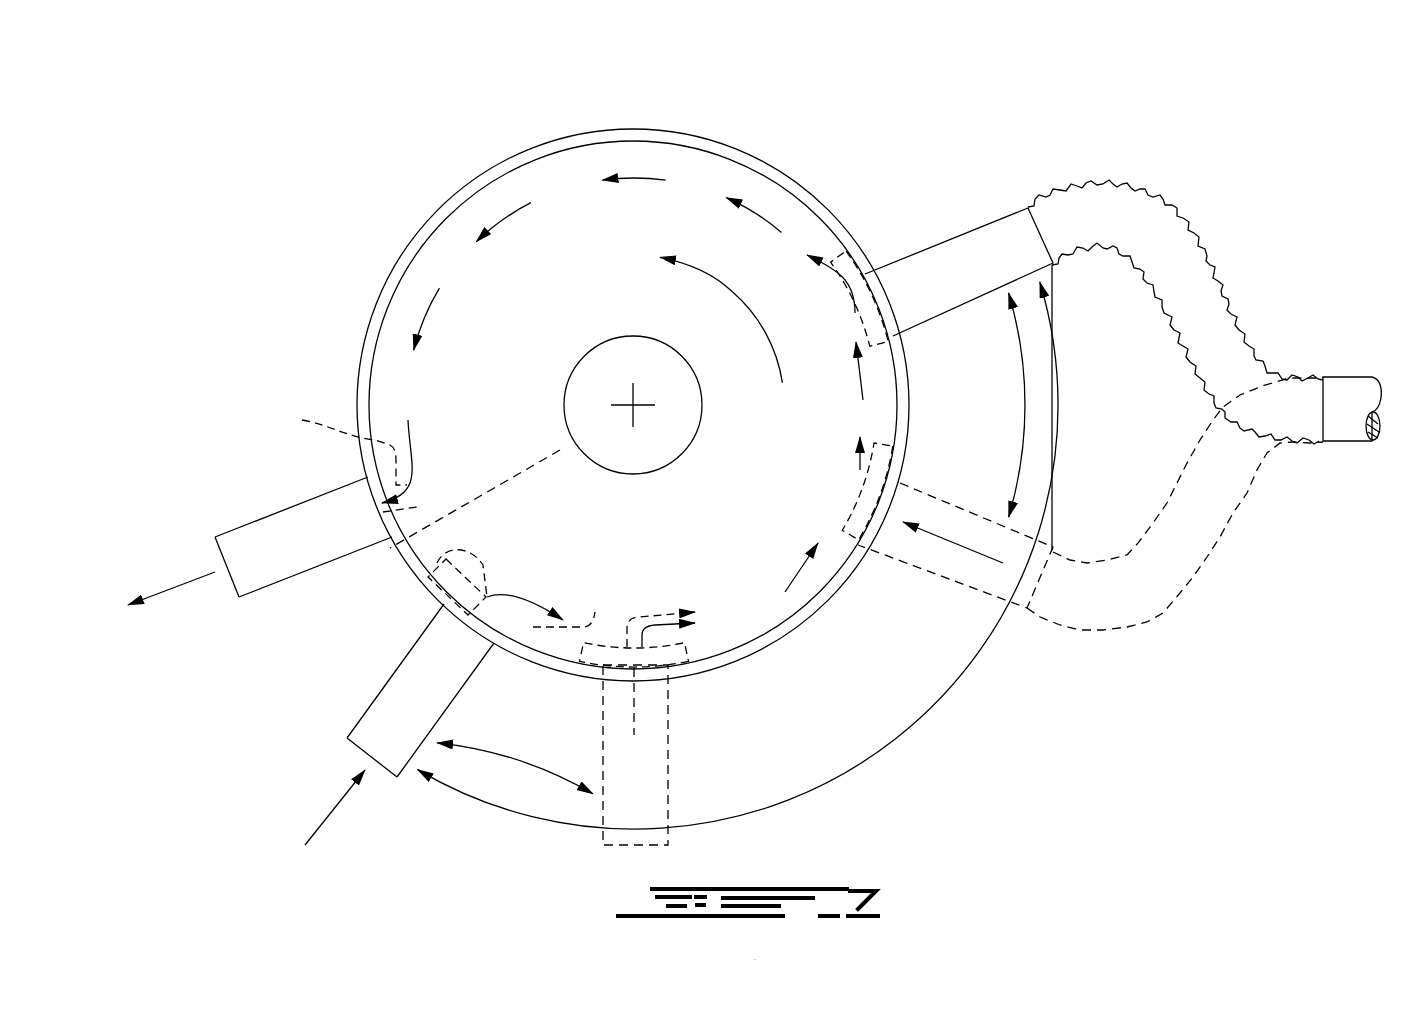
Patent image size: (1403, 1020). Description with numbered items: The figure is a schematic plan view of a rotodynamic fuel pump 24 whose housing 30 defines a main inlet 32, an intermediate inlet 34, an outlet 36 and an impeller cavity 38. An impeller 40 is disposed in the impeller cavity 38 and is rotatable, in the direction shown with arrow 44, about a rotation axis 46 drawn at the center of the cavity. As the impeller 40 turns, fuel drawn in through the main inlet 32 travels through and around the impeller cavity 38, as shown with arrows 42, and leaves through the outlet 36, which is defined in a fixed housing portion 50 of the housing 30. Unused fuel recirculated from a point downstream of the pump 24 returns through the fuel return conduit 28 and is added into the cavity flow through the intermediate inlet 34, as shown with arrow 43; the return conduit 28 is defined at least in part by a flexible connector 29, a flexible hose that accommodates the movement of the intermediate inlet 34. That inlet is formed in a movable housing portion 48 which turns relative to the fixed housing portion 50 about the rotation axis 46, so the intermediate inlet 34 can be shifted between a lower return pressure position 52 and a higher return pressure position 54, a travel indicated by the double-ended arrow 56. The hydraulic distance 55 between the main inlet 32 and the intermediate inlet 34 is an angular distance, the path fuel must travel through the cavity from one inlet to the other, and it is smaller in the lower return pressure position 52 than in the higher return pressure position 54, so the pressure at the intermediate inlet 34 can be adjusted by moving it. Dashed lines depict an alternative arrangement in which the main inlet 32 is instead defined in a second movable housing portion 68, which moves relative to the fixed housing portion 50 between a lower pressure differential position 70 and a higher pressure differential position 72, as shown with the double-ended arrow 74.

The pump 24 is at (250, 170).
The fuel return conduit 28 is at (1217, 316).
The flexible connector 29 is at (1141, 256).
The housing 30 is at (735, 140).
The main inlet 32 is at (417, 572).
The intermediate inlet 34 is at (862, 320).
The outlet 36 is at (342, 456).
The impeller cavity 38 is at (650, 130).
The impeller 40 is at (566, 246).
The arrows 42 is at (514, 212).
The arrow 43 is at (757, 208).
The arrow 44 is at (735, 290).
The rotation axis 46 is at (641, 396).
The movable housing portion 48 is at (850, 267).
The fixed housing portion 50 is at (813, 608).
The lower return pressure position 52 is at (1032, 518).
The higher return pressure position 54 is at (1005, 204).
The hydraulic distance 55 is at (943, 700).
The double-ended arrow 56 is at (1030, 410).
The movable housing portion 68 is at (607, 645).
The lower pressure differential position 70 is at (620, 777).
The higher pressure differential position 72 is at (338, 712).
The double-ended arrow 74 is at (506, 780).